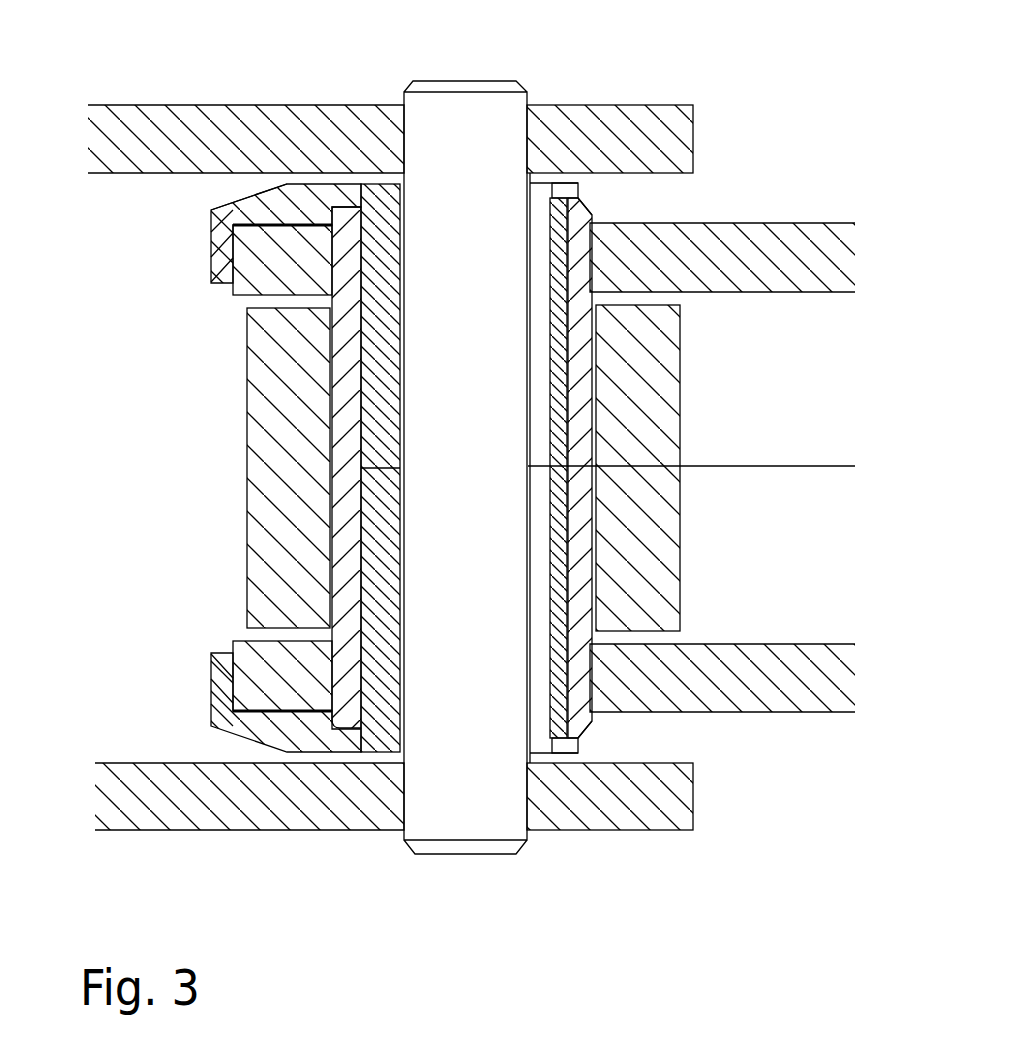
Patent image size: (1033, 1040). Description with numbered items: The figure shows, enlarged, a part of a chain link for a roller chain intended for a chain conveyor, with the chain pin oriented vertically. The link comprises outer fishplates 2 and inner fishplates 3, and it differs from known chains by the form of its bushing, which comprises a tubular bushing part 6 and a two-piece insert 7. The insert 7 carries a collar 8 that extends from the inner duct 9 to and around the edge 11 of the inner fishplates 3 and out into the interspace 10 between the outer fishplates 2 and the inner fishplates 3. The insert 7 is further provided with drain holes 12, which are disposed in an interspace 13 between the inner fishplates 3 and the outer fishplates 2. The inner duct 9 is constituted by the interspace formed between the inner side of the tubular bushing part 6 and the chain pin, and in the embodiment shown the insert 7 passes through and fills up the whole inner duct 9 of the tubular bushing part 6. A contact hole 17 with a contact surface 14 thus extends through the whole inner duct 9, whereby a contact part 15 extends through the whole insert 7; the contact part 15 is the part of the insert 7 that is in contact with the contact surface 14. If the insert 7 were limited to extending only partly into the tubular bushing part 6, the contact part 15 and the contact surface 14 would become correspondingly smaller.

The outer fishplates 2 is at (668, 103).
The inner fishplates 3 is at (247, 280).
The tubular bushing part 6 is at (349, 220).
The two-piece insert 7 is at (381, 172).
The collar 8 is at (220, 230).
The inner duct 9 is at (394, 168).
The interspace 10 is at (279, 182).
The edge 11 is at (212, 280).
The drain holes 12 is at (577, 190).
The interspace 13 is at (640, 211).
The contact surface 14 is at (411, 314).
The contact part 15 is at (383, 423).
The contact hole 17 is at (540, 208).